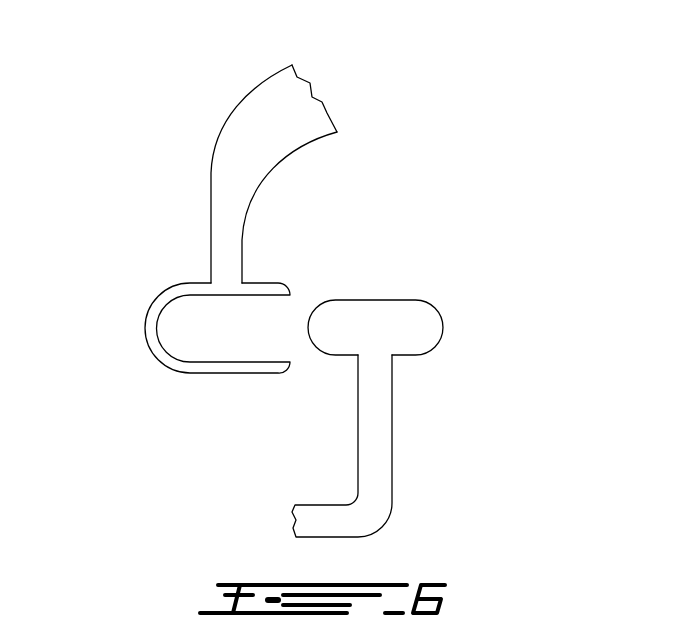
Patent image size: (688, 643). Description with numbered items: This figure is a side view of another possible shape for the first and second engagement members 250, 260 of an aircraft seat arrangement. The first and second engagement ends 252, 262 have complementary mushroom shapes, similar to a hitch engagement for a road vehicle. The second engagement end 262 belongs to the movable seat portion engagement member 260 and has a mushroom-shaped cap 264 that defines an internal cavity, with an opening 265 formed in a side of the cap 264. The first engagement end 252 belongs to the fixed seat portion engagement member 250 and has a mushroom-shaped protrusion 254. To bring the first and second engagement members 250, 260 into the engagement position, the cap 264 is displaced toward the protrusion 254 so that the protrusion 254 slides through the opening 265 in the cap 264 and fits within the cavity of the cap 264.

The first engagement member 250 is at (412, 505).
The first engagement end 252 is at (453, 389).
The mushroom-shaped protrusion 254 is at (433, 300).
The second engagement member 260 is at (200, 116).
The second engagement end 262 is at (135, 368).
The mushroom-shaped cap 264 is at (177, 283).
The opening 265 is at (277, 320).